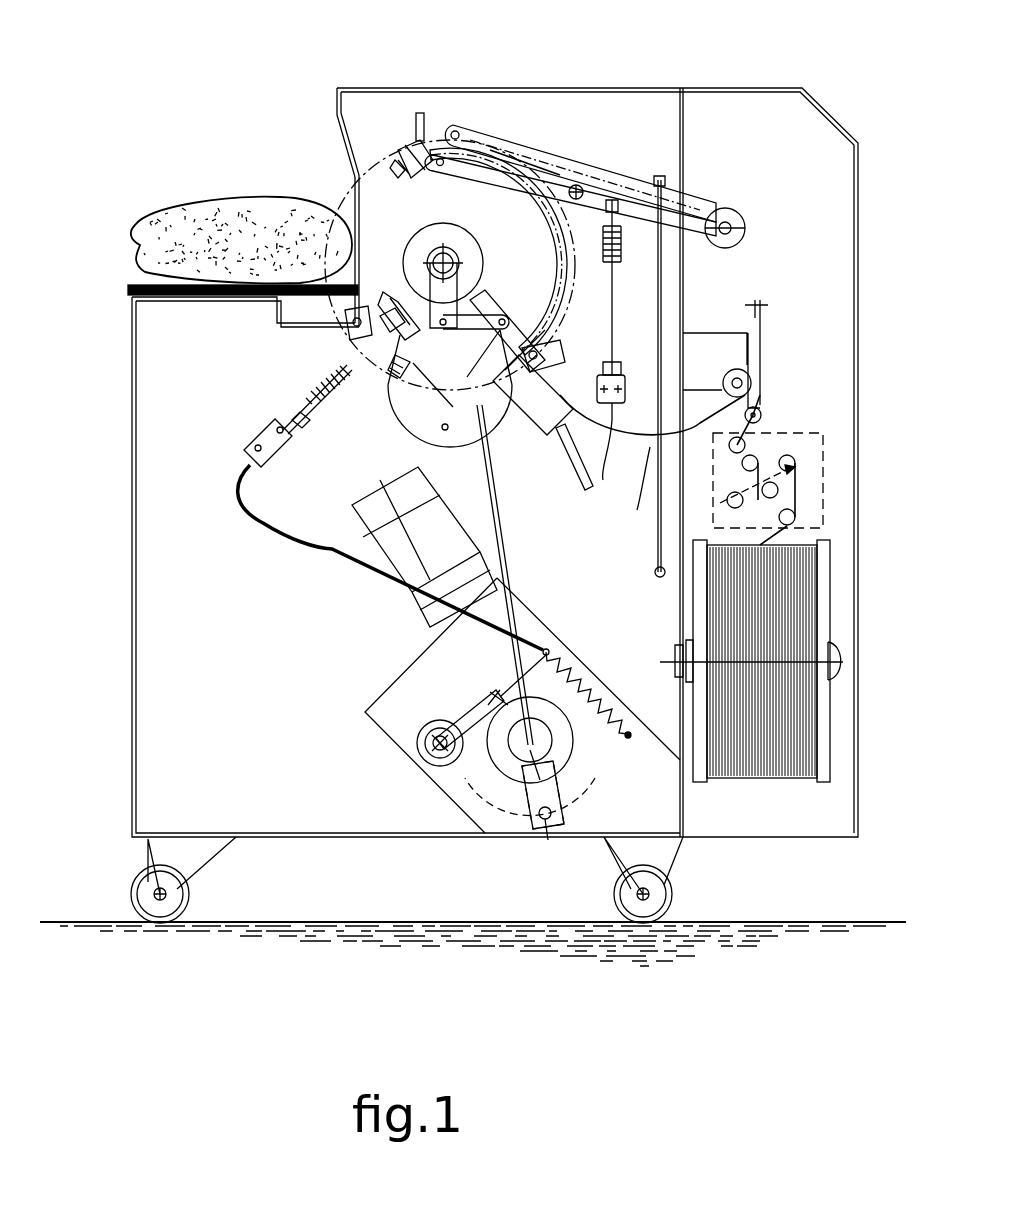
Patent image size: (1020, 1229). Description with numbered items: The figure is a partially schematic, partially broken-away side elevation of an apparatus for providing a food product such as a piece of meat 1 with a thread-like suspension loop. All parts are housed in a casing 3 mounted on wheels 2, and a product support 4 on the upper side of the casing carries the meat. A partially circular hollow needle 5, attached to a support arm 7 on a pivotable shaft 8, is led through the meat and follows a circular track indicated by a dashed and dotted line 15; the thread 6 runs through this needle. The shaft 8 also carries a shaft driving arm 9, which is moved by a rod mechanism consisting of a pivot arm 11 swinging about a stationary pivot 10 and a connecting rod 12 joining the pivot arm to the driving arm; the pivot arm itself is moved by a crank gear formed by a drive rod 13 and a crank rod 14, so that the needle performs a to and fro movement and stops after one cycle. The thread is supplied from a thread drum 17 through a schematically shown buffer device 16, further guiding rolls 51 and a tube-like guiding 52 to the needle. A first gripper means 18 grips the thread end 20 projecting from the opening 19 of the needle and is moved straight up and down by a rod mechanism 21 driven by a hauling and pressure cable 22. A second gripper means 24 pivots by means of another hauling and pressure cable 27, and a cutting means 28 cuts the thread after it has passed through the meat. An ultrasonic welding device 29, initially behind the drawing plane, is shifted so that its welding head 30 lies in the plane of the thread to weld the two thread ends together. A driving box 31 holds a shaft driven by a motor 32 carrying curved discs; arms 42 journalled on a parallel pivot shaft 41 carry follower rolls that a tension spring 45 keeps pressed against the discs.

The piece of meat 1 is at (233, 230).
The wheels 2 is at (138, 885).
The casing 3 is at (132, 510).
The product support 4 is at (190, 300).
The hollow needle 5 is at (553, 328).
The thread 6 is at (490, 150).
The support arm 7 is at (548, 355).
The pivotable shaft 8 is at (455, 250).
The shaft driving arm 9 is at (455, 285).
The stationary pivot 10 is at (345, 348).
The pivot arm 11 is at (446, 430).
The connecting rod 12 is at (480, 300).
The drive rod 13 is at (500, 565).
The crank rod 14 is at (550, 790).
The dashed and dotted line 15 is at (322, 172).
The buffer device 16 is at (825, 485).
The thread drum 17 is at (790, 617).
The first gripper means 18 is at (410, 160).
The opening 19 is at (423, 112).
The thread end 20 is at (398, 168).
The rod mechanism 21 is at (558, 135).
The hauling and pressure cable 22 is at (608, 482).
The second gripper means 24 is at (380, 340).
The hauling and pressure cable 27 is at (273, 540).
The cutting means 28 is at (400, 367).
The welding device 29 is at (515, 445).
The welding head 30 is at (383, 282).
The driving box 31 is at (405, 672).
The motor 32 is at (400, 590).
The pivot shaft 41 is at (430, 740).
The arms 42 is at (455, 700).
The tension spring 45 is at (595, 690).
The guiding rolls 51 is at (745, 365).
The tube-like guiding 52 is at (633, 450).